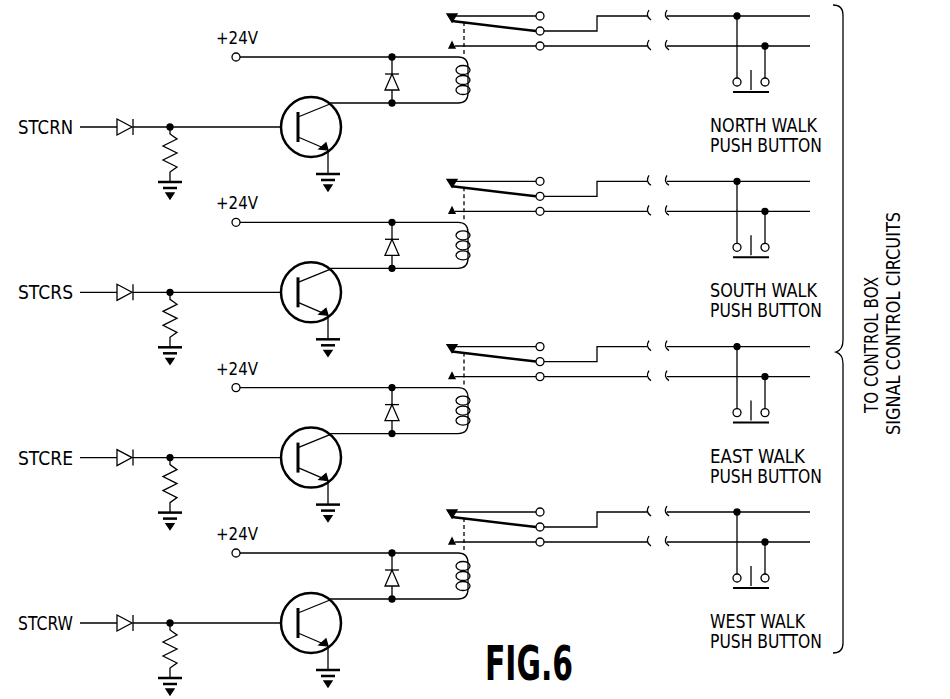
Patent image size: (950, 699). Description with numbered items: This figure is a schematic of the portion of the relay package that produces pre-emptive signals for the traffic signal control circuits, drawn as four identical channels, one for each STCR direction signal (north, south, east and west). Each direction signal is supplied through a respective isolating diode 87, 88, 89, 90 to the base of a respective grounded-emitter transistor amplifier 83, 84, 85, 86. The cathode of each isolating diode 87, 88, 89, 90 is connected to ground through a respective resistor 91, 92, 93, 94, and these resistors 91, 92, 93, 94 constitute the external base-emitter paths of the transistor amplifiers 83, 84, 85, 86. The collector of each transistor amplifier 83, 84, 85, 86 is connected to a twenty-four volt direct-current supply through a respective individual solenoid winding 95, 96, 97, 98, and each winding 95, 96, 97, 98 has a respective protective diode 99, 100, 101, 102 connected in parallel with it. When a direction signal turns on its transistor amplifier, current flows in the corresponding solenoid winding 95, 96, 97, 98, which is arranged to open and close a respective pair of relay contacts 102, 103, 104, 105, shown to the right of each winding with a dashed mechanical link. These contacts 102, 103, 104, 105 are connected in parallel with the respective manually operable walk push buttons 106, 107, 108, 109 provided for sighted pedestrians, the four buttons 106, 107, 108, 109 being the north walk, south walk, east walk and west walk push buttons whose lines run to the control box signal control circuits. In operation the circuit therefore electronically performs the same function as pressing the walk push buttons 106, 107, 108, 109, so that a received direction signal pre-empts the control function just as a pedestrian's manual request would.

The grounded-emitter transistor amplifier 83 is at (341, 129).
The grounded-emitter transistor amplifier 84 is at (329, 309).
The grounded-emitter transistor amplifier 85 is at (329, 475).
The grounded-emitter transistor amplifier 86 is at (329, 640).
The isolating diode 87 is at (123, 117).
The isolating diode 88 is at (128, 271).
The isolating diode 89 is at (128, 437).
The isolating diode 90 is at (128, 602).
The resistor 91 is at (177, 158).
The resistor 92 is at (186, 328).
The resistor 93 is at (186, 494).
The resistor 94 is at (186, 659).
The solenoid winding 95 is at (471, 85).
The solenoid winding 96 is at (453, 245).
The solenoid winding 97 is at (453, 411).
The solenoid winding 98 is at (453, 576).
The protective diode 99 is at (385, 79).
The protective diode 100 is at (363, 245).
The protective diode 101 is at (363, 411).
The protective diode / relay contacts 102 is at (449, 26).
The relay contacts 103 is at (605, 198).
The relay contacts 104 is at (605, 364).
The relay contacts 105 is at (605, 529).
The walk push button 106 is at (733, 91).
The walk push button 107 is at (725, 217).
The walk push button 108 is at (725, 383).
The walk push button 109 is at (725, 548).